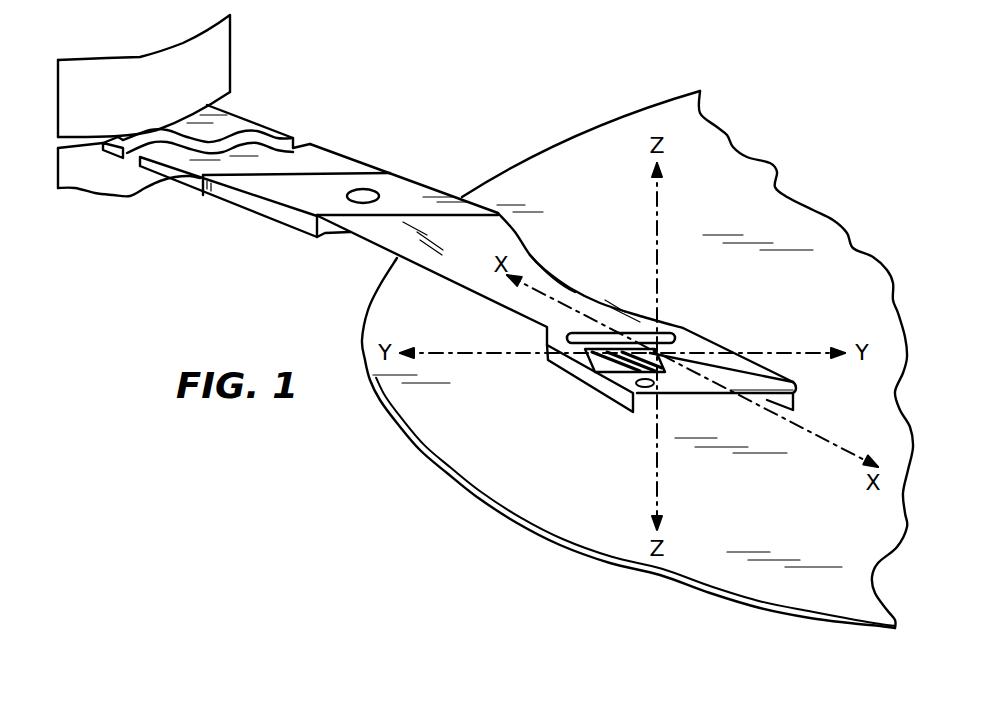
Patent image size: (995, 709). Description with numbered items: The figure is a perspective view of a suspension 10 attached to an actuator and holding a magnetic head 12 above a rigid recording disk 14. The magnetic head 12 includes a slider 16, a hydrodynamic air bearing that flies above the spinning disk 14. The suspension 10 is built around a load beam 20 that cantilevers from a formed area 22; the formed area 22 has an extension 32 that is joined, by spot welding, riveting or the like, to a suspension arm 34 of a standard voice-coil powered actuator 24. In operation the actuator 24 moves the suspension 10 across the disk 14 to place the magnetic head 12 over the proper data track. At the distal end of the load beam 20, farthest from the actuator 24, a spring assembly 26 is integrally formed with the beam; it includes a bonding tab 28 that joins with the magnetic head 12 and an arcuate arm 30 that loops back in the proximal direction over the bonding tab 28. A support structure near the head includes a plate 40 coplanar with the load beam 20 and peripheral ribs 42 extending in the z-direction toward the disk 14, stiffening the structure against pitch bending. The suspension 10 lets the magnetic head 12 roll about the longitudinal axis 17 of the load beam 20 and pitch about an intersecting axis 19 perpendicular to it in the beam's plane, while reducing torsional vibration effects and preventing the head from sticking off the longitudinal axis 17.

The suspension 10 is at (341, 268).
The magnetic head 12 is at (540, 323).
The rigid recording disk 14 is at (573, 170).
The slider 16 is at (583, 357).
The longitudinal axis 17 is at (803, 430).
The intersecting axis 19 is at (497, 356).
The load beam 20 is at (540, 280).
The formed area 22 is at (413, 179).
The voice-coil powered actuator 24 is at (220, 72).
The spring assembly 26 is at (571, 408).
The bonding tab 28 is at (625, 342).
The arcuate arm 30 is at (717, 380).
The extension 32 is at (263, 188).
The suspension arm 34 is at (347, 162).
The plate 40 is at (698, 345).
The peripheral ribs 42 is at (617, 394).